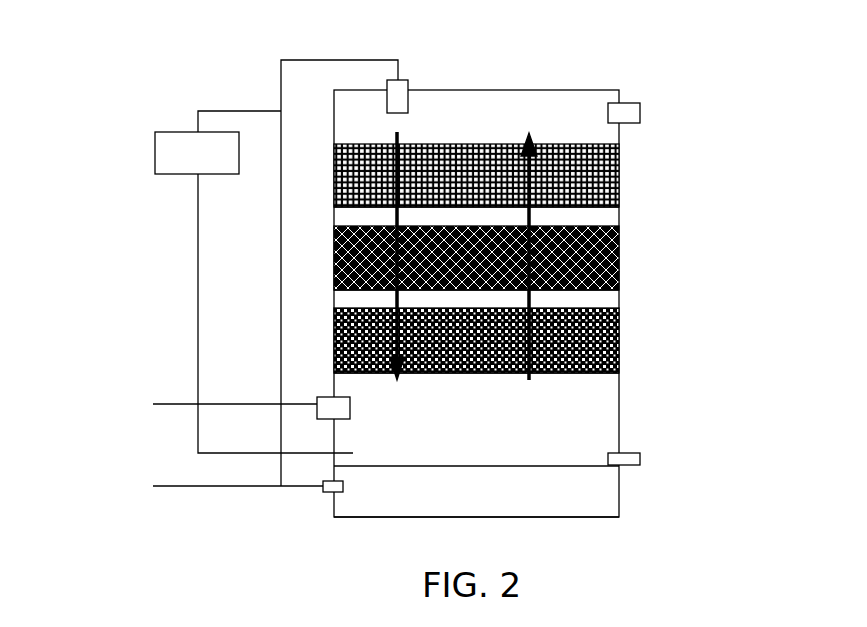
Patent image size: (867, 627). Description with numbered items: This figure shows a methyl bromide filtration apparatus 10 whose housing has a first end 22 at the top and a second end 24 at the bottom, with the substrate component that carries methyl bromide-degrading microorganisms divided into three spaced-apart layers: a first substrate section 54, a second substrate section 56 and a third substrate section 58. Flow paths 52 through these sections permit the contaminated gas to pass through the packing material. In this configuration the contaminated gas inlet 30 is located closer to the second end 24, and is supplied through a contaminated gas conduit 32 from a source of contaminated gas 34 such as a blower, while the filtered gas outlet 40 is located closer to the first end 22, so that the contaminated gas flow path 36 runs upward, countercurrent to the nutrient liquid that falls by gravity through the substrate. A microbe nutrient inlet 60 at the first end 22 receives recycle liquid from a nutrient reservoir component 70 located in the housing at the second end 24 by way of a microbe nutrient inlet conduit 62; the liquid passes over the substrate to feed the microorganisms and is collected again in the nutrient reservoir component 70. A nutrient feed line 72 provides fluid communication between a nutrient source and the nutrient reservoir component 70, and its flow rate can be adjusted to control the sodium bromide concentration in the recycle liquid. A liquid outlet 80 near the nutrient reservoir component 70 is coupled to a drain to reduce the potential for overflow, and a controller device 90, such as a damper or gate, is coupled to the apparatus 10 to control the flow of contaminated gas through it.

The filtration apparatus 10 is at (137, 88).
The first end 22 is at (585, 91).
The second end 24 is at (617, 518).
The contaminated gas inlet 30 is at (323, 400).
The contaminated gas conduit 32 is at (170, 405).
The source of contaminated gas 34 is at (401, 382).
The contaminated gas flow path 36 is at (527, 382).
The filtered gas outlet 40 is at (642, 112).
The flow paths 52 is at (603, 190).
The first substrate section 54 is at (620, 333).
The second substrate section 56 is at (619, 252).
The third substrate section 58 is at (620, 168).
The microbe nutrient inlet 60 is at (402, 87).
The microbe nutrient inlet conduit 62 is at (280, 247).
The nutrient reservoir component 70 is at (597, 488).
The nutrient feed line 72 is at (325, 492).
The liquid outlet 80 is at (640, 458).
The controller device 90 is at (162, 148).